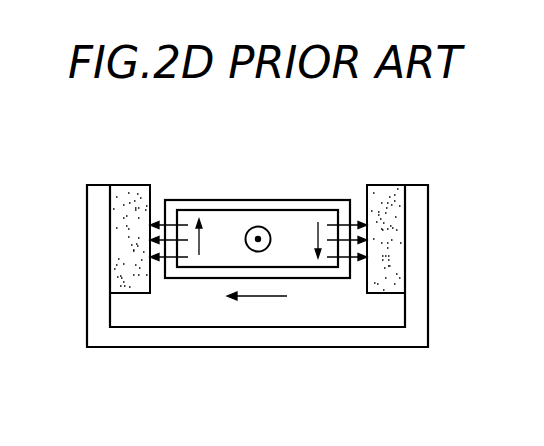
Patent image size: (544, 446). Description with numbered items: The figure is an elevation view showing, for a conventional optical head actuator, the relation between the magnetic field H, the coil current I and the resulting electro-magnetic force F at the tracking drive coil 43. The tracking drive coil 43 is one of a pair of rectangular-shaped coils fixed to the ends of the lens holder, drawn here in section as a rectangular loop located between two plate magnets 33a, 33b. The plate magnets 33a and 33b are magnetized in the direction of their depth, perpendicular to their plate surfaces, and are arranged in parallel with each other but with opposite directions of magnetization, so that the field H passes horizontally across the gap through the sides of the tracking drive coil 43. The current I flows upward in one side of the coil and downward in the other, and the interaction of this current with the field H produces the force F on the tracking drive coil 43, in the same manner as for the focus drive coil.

The plate magnet 33a is at (122, 185).
The plate magnet 33b is at (387, 185).
The tracking drive coil 43 is at (313, 280).